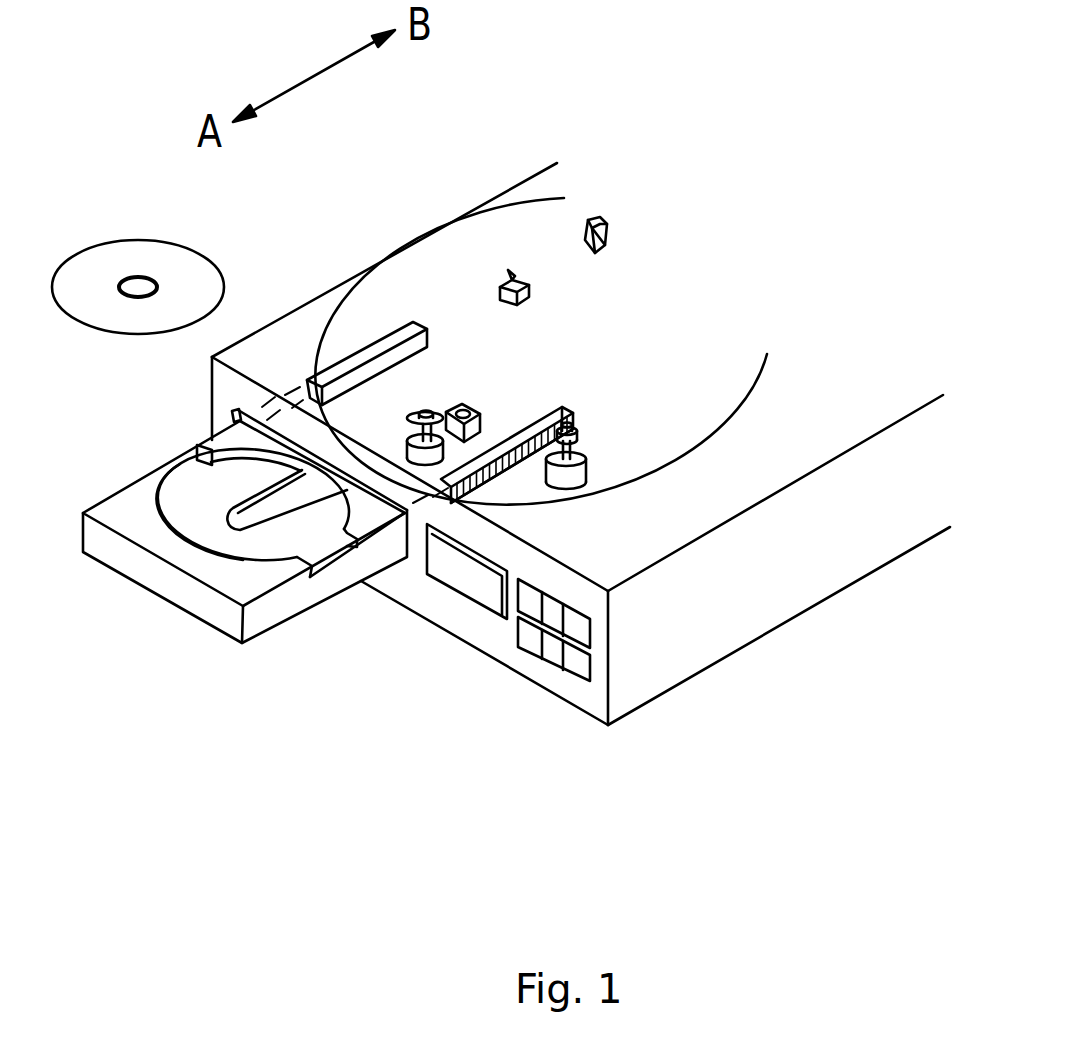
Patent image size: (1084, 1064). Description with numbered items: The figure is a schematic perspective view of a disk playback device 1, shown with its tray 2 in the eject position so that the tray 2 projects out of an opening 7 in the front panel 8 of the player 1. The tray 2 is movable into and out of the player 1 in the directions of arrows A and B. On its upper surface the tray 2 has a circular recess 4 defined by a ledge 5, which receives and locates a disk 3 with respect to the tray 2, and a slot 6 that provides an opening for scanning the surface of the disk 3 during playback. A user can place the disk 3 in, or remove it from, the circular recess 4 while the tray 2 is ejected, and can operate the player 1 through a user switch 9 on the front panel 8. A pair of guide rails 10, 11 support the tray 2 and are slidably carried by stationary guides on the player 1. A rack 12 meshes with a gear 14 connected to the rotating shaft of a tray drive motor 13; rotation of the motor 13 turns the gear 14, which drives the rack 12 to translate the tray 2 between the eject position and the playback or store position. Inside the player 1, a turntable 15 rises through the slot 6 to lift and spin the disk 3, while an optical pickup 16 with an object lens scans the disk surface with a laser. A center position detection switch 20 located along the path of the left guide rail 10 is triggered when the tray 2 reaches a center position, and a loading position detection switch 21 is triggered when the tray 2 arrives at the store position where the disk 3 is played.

The disk playback device 1 is at (783, 600).
The tray 2 is at (198, 603).
The disk 3 is at (143, 245).
The circular recess 4 is at (188, 517).
The ledge 5 is at (249, 553).
The slot 6 is at (267, 507).
The opening 7 is at (404, 572).
The front panel 8 is at (448, 613).
The user switch 9 is at (573, 667).
The guide rail 10 is at (385, 345).
The guide rail 11 is at (562, 408).
The rack 12 is at (505, 485).
The tray drive motor 13 is at (590, 463).
The gear 14 is at (580, 425).
The turntable 15 is at (405, 418).
The optical pickup 16 is at (460, 402).
The center position detection switch 20 is at (506, 275).
The loading position detection switch 21 is at (603, 217).